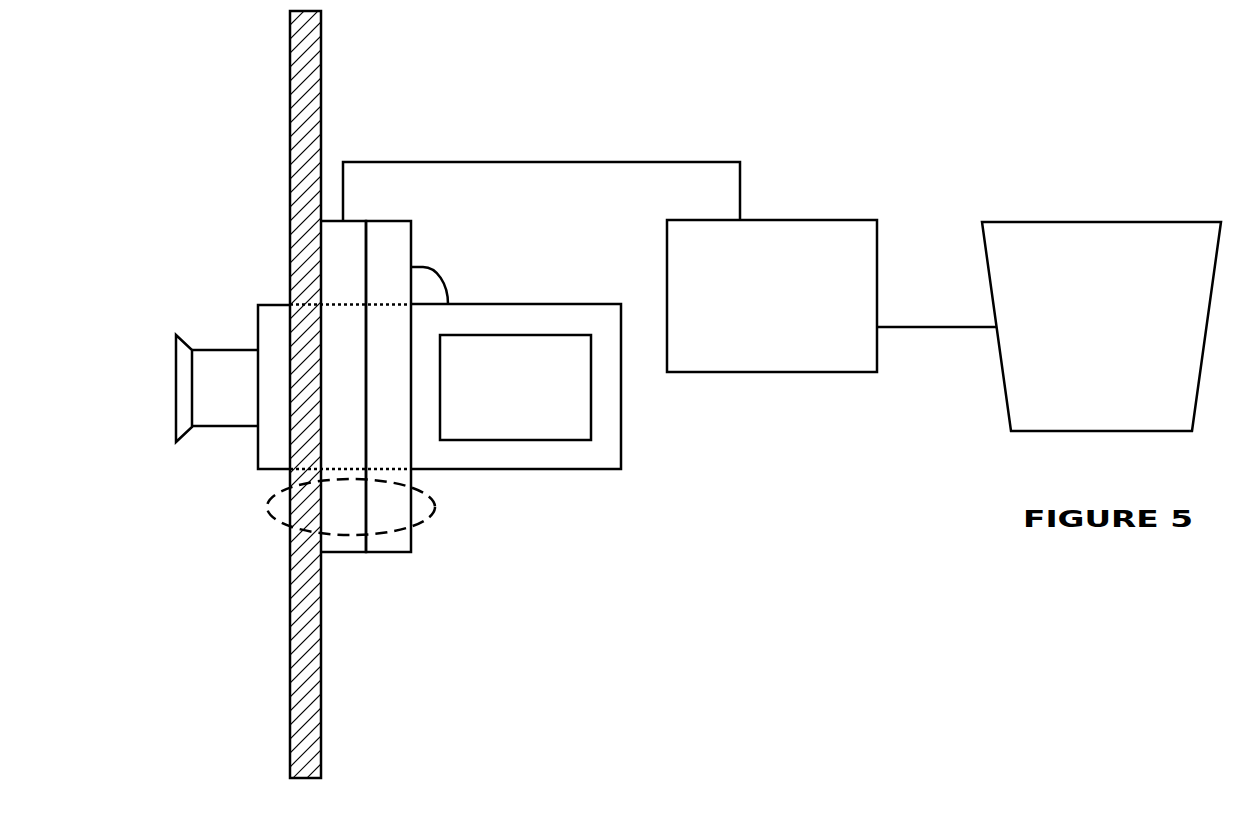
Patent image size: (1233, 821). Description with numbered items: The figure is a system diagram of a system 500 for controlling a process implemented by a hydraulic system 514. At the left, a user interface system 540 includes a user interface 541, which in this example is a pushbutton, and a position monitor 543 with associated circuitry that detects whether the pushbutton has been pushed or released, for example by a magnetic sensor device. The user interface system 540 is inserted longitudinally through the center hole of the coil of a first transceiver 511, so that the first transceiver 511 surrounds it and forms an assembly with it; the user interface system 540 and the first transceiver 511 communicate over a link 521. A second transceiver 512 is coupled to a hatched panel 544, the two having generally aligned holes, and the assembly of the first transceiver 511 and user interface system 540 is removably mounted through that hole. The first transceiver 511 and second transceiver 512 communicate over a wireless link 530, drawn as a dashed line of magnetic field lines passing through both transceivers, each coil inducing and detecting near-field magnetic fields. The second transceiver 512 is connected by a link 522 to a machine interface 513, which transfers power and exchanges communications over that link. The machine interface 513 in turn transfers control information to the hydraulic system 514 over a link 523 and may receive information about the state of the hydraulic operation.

The system 500 is at (982, 117).
The first transceiver 511 is at (387, 552).
The second transceiver 512 is at (342, 552).
The machine interface 513 is at (792, 337).
The hydraulic system 514 is at (1120, 367).
The link 521 is at (432, 266).
The link 522 is at (630, 162).
The link 523 is at (900, 327).
The wireless link 530 is at (433, 520).
The user interface system 540 is at (257, 453).
The user interface 541 is at (175, 387).
The position monitor 543 is at (537, 427).
The panel 544 is at (321, 125).